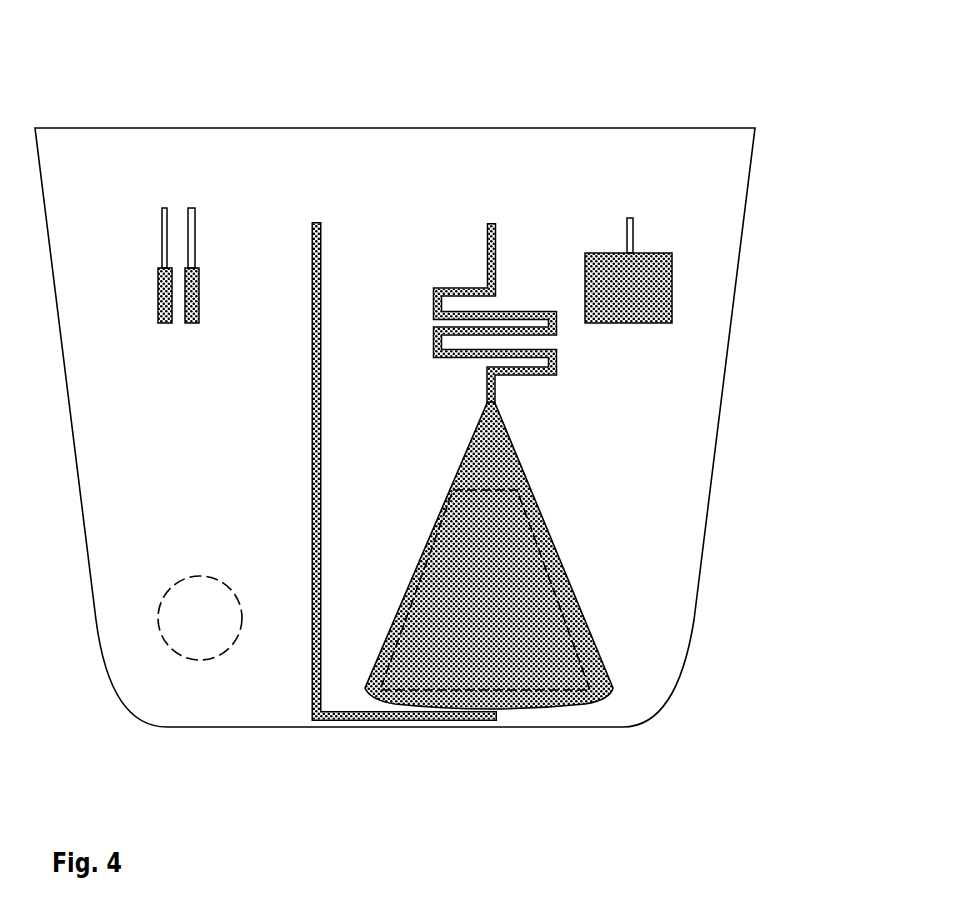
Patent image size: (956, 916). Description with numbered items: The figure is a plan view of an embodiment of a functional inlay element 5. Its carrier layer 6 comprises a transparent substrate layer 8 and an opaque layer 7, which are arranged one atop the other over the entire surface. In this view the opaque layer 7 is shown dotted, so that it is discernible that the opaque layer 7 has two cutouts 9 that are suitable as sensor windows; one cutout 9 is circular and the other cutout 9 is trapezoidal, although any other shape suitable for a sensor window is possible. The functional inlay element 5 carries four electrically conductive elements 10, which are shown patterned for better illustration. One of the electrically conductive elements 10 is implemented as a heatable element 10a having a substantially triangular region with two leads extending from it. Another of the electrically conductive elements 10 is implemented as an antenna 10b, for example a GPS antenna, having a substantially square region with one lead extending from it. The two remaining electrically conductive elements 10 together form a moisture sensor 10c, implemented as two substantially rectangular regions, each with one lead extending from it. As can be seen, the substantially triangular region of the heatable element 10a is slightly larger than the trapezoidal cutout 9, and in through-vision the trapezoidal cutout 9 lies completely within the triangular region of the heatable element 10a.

The functional inlay element 5 is at (77, 94).
The carrier layer 6 is at (395, 398).
The opaque layer 7 is at (395, 427).
The transparent substrate layer 8 is at (438, 150).
The cutouts 9 is at (201, 630).
The electrically conductive elements 10 is at (496, 432).
The heatable element 10a is at (518, 708).
The antenna 10b is at (670, 325).
The moisture sensor 10c is at (172, 283).